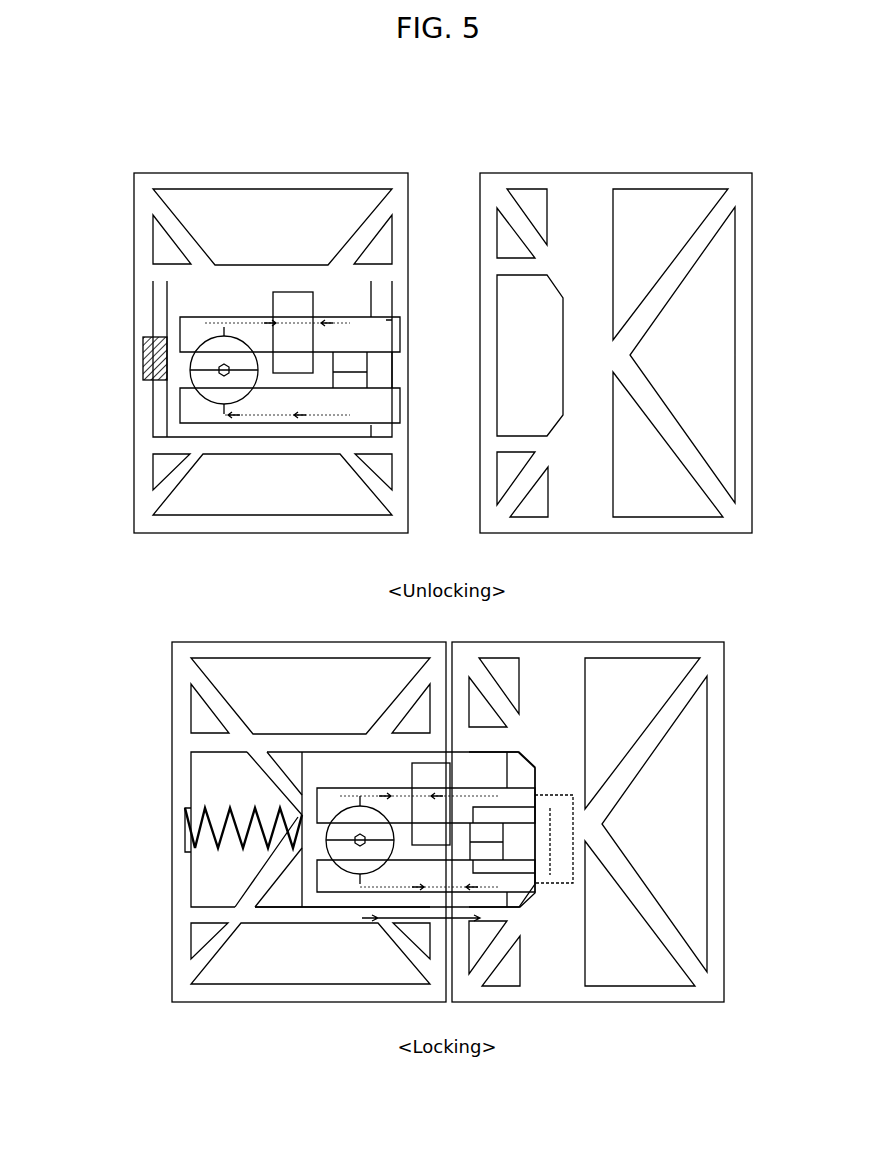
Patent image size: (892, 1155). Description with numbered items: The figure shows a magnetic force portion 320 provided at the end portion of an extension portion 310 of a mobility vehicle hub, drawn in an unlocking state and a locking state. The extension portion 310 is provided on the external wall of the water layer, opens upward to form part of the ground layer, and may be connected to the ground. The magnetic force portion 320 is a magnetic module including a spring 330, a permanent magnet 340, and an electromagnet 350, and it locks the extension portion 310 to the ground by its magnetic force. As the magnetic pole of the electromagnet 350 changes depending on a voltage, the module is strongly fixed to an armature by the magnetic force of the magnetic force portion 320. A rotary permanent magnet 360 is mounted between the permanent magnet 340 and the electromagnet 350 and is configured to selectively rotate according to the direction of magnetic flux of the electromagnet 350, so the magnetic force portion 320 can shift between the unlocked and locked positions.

The extension portion 310 is at (279, 534).
The magnetic force portion 320 is at (182, 297).
The spring 330 is at (142, 366).
The permanent magnet 340 is at (398, 362).
The electromagnet 350 is at (297, 292).
The rotary permanent magnet 360 is at (212, 344).